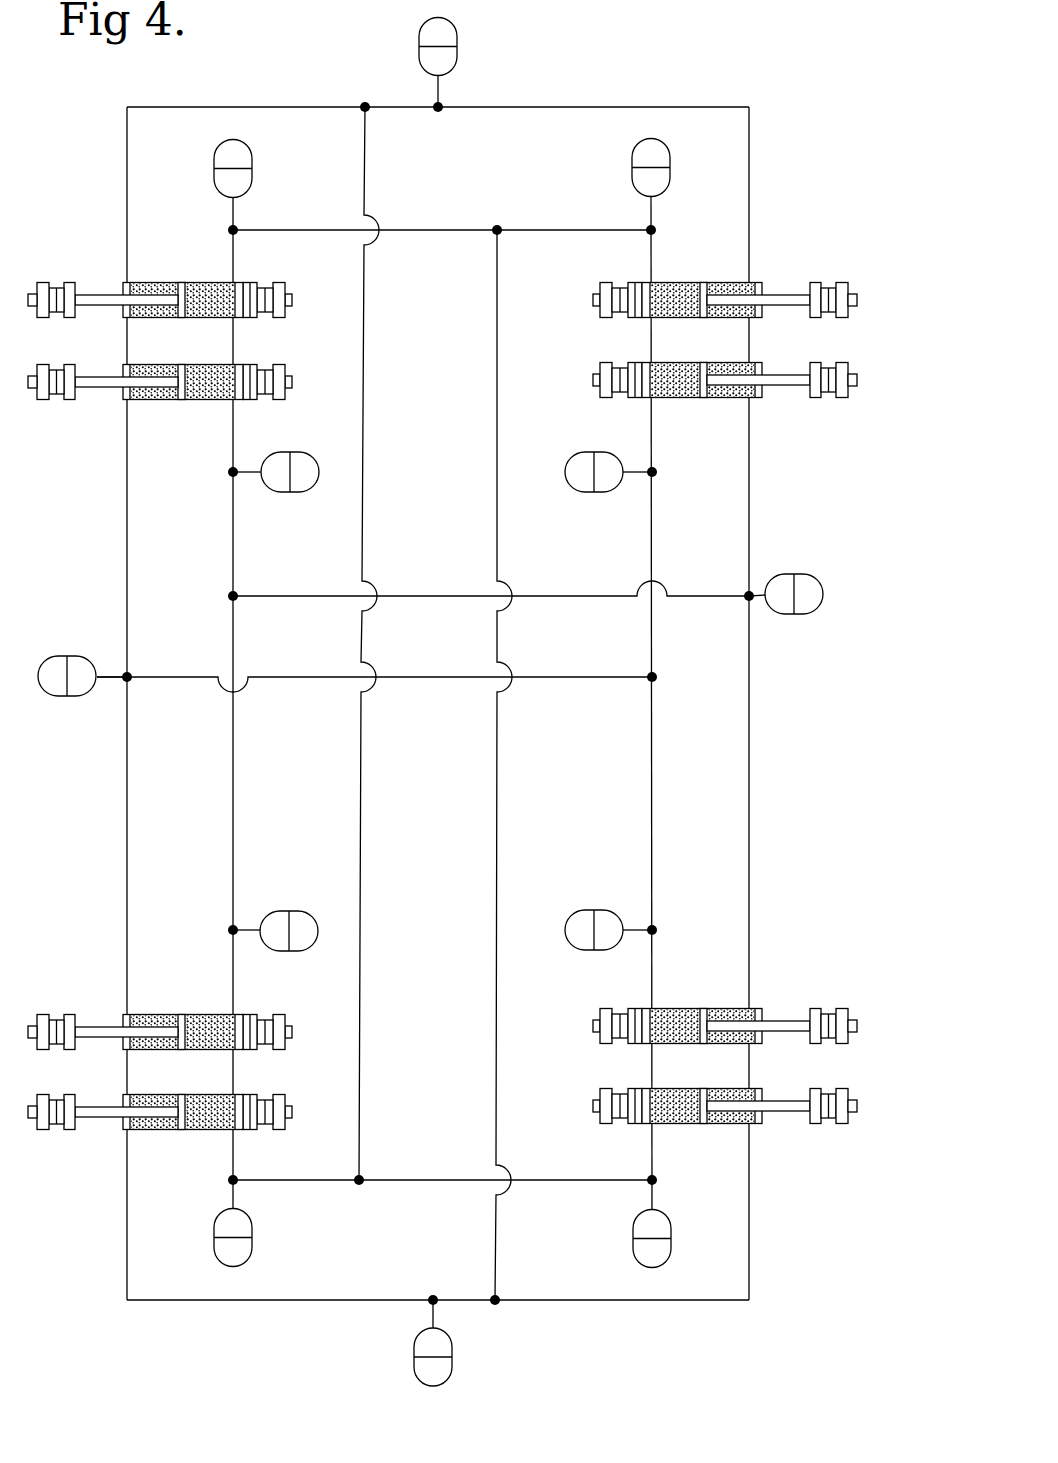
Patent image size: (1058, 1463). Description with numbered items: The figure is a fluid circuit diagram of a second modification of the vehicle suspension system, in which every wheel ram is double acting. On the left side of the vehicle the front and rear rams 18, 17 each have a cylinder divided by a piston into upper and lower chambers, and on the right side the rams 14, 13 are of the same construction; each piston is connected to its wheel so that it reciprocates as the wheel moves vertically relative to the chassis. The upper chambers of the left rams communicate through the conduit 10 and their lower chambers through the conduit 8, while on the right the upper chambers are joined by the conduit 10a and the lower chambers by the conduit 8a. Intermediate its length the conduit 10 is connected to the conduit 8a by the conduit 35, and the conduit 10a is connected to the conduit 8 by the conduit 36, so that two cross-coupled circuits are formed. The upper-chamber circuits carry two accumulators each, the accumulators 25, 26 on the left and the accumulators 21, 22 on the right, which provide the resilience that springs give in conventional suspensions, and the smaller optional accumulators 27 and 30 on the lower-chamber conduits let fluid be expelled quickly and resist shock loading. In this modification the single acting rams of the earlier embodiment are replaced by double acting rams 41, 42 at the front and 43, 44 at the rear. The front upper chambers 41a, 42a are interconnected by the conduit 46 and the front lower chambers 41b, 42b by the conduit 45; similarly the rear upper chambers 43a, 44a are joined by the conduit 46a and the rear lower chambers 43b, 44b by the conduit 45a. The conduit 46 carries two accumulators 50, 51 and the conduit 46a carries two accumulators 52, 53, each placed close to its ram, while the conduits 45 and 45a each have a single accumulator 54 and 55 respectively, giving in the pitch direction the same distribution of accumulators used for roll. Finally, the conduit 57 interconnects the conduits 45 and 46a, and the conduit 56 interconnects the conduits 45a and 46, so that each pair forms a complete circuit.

The conduit 8 is at (118, 848).
The conduit 8a is at (763, 715).
The conduit 10 is at (245, 805).
The conduit 10a is at (657, 775).
The double acting ram 13 is at (712, 408).
The double acting ram 14 is at (718, 1000).
The double acting ram 17 is at (180, 997).
The double acting ram 18 is at (183, 407).
The accumulator 21 is at (588, 448).
The accumulator 22 is at (602, 906).
The accumulator 25 is at (290, 906).
The accumulator 26 is at (300, 497).
The accumulator 27 is at (805, 572).
The accumulator 30 is at (52, 698).
The conduit 35 is at (435, 587).
The conduit 36 is at (435, 686).
The double acting ram 41 is at (177, 273).
The upper chamber 41a is at (220, 323).
The lower chamber 41b is at (145, 322).
The double acting ram 42 is at (692, 277).
The upper chamber 42a is at (676, 278).
The lower chamber 42b is at (733, 278).
The double acting ram 43 is at (707, 1134).
The upper chamber 43a is at (672, 1128).
The lower chamber 43b is at (745, 1127).
The double acting ram 44 is at (181, 1126).
The upper chamber 44a is at (225, 1093).
The lower chamber 44b is at (138, 1132).
The conduit 45 is at (605, 100).
The conduit 45a is at (345, 1307).
The conduit 46 is at (551, 222).
The conduit 46a is at (455, 1188).
The accumulator 50 is at (247, 130).
The accumulator 51 is at (675, 158).
The accumulator 52 is at (265, 1240).
The accumulator 53 is at (625, 1240).
The accumulator 54 is at (463, 32).
The accumulator 55 is at (465, 1353).
The conduit 56 is at (505, 805).
The conduit 57 is at (372, 829).